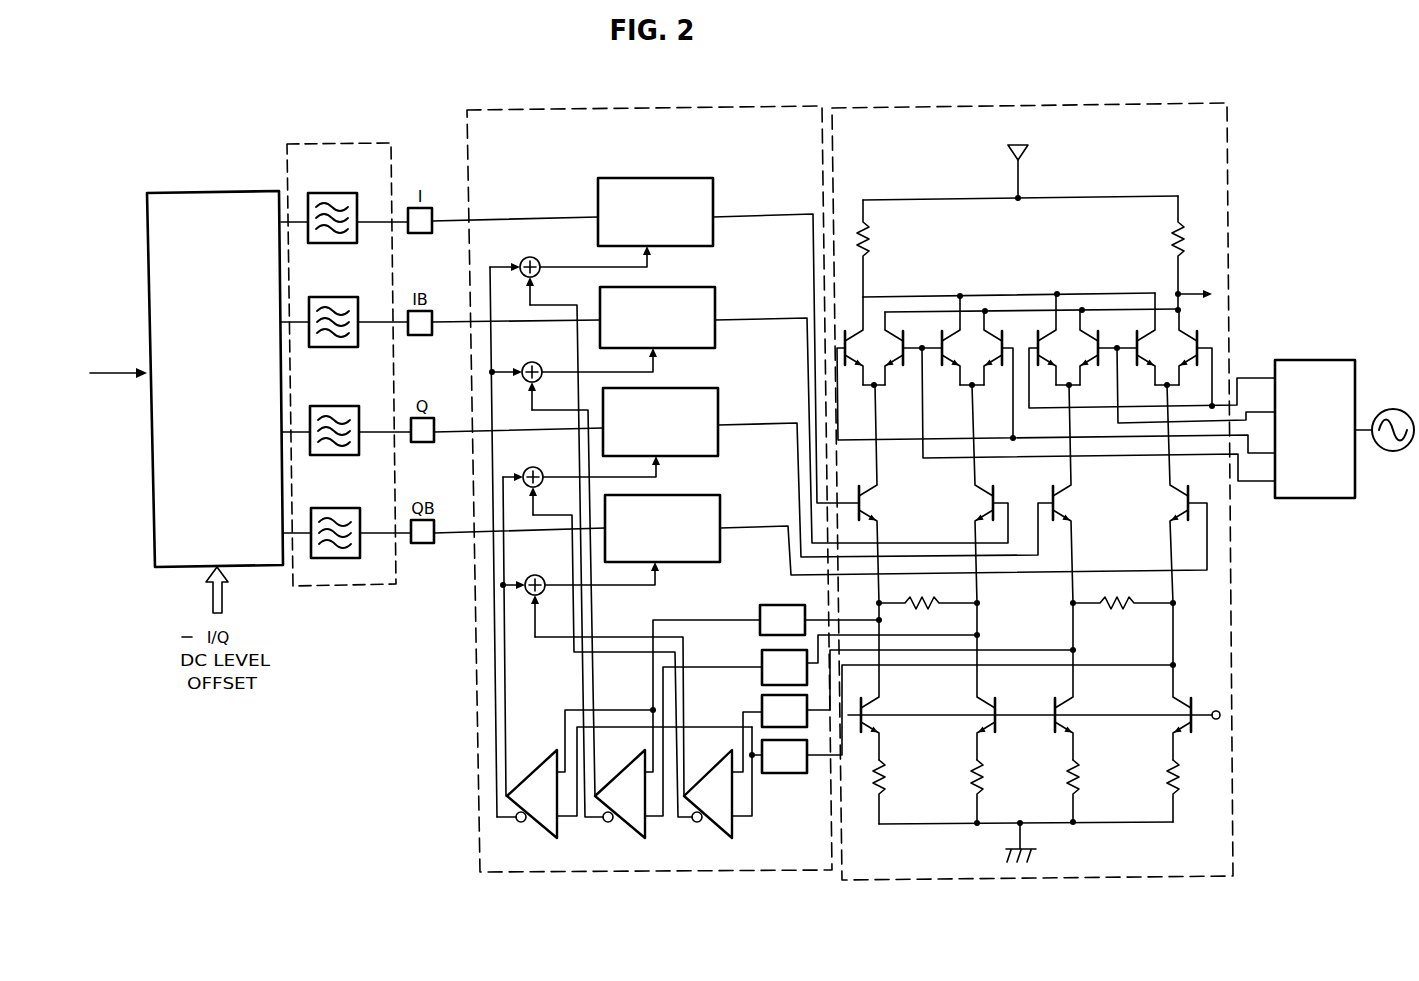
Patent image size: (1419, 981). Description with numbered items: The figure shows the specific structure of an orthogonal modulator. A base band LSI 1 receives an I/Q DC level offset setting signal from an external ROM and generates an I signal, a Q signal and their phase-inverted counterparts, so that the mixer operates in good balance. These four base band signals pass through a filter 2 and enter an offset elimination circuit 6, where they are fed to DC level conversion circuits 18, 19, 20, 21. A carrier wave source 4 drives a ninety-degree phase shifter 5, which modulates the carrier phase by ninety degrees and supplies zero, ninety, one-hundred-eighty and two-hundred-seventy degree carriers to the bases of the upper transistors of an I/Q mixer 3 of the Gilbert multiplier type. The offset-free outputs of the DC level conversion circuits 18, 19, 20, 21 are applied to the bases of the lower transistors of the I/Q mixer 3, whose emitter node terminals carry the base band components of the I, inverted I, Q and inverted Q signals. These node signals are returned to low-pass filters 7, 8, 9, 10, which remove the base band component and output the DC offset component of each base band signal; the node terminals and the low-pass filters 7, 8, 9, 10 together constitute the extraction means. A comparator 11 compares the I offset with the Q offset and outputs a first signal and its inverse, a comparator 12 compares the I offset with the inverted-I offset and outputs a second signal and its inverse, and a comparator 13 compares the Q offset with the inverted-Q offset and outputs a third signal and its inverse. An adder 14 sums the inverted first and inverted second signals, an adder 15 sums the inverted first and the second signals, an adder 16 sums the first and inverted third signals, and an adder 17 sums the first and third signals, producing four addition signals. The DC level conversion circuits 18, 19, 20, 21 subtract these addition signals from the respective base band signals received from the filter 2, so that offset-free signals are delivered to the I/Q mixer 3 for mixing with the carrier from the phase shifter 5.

The base band LSI 1 is at (225, 191).
The filter 2 is at (330, 143).
The I/Q mixer 3 is at (1108, 105).
The carrier wave source 4 is at (1406, 450).
The 90° phase shifter 5 is at (1335, 498).
The offset elimination circuit 6 is at (712, 106).
The low-pass filter 7 is at (793, 607).
The low-pass filter 8 is at (807, 677).
The low-pass filter 9 is at (807, 725).
The low-pass filter 10 is at (806, 773).
The comparator 11 is at (558, 839).
The comparator 12 is at (646, 839).
The comparator 13 is at (734, 839).
The adder 14 is at (532, 256).
The adder 15 is at (533, 359).
The adder 16 is at (534, 464).
The adder 17 is at (536, 572).
The DC level conversion circuit 18 is at (674, 178).
The DC level conversion circuit 19 is at (671, 287).
The DC level conversion circuit 20 is at (676, 388).
The DC level conversion circuit 21 is at (674, 495).